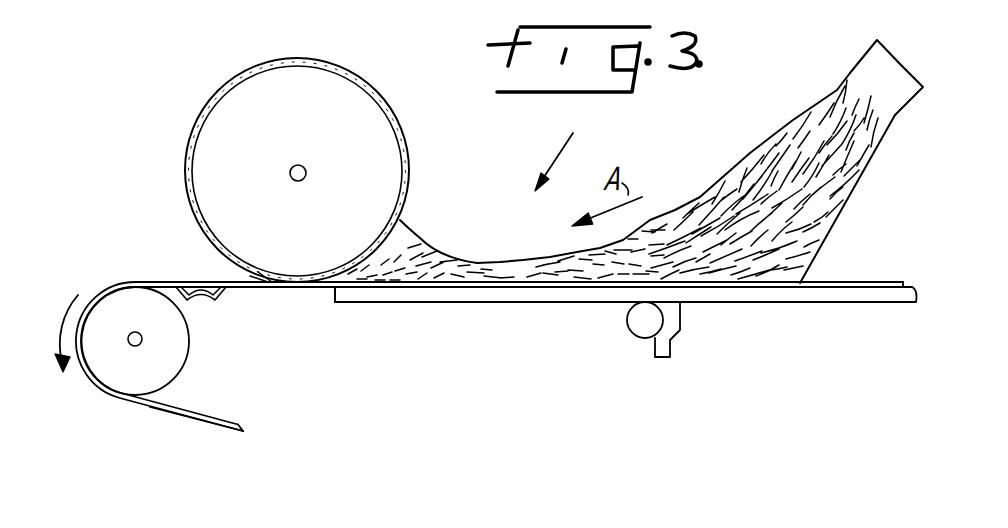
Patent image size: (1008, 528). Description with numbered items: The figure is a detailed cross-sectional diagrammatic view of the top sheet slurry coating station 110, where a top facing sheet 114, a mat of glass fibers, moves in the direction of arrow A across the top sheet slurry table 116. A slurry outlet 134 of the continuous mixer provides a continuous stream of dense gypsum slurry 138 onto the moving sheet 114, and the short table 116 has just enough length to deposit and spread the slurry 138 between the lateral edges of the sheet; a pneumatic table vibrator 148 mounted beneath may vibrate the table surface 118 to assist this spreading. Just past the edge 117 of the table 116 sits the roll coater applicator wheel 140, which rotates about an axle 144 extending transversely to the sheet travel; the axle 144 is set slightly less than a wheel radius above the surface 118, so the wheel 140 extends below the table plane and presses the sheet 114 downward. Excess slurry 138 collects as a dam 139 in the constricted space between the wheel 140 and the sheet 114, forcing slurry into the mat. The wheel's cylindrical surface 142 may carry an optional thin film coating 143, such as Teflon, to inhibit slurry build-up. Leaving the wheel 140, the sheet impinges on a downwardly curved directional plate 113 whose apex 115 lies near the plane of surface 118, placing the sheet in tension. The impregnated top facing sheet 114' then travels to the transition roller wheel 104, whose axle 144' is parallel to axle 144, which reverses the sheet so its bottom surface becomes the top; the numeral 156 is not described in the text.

The transition roller wheel 104 is at (163, 368).
The top sheet slurry coating station 110 is at (589, 146).
The directional plate 113 is at (222, 327).
The top facing sheet 114 is at (503, 329).
The impregnated top facing sheet 114' is at (188, 441).
The apex 115 is at (202, 283).
The top sheet slurry table 116 is at (425, 330).
The edge of table 117 is at (308, 332).
The table surface 118 is at (820, 253).
The slurry outlet 134 is at (867, 62).
The dense gypsum slurry 138 is at (760, 175).
The dam 139 is at (414, 250).
The applicator wheel 140 is at (243, 113).
The cylindrical surface 142 is at (352, 78).
The thin film coating 143 is at (402, 130).
The axle 144 is at (260, 188).
The axle of transition roller wheel 144' is at (88, 387).
The pneumatic table vibrator 148 is at (645, 330).
The support member 156 is at (636, 518).